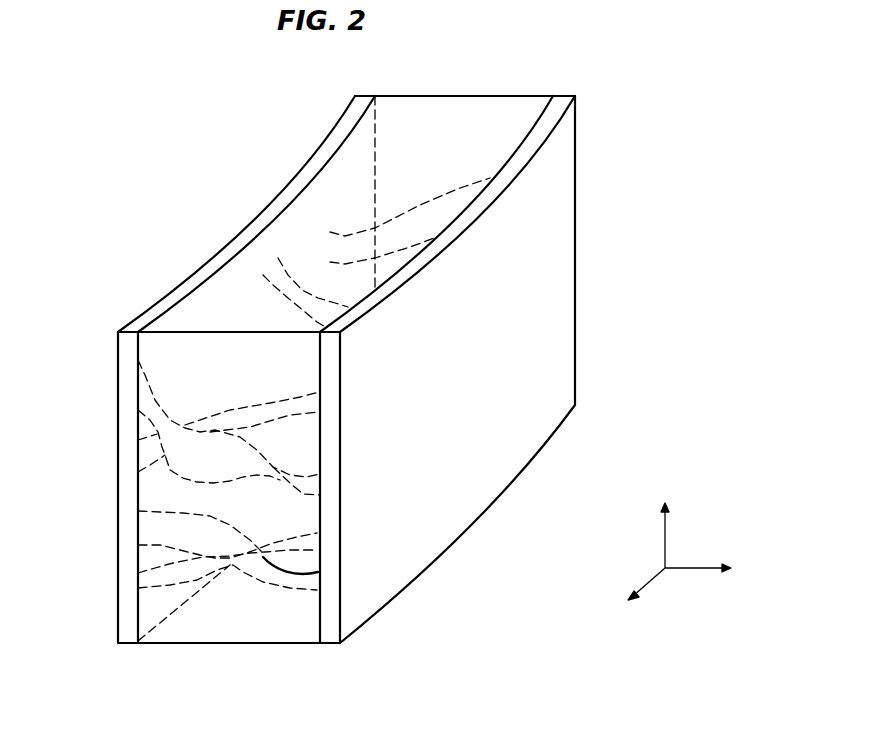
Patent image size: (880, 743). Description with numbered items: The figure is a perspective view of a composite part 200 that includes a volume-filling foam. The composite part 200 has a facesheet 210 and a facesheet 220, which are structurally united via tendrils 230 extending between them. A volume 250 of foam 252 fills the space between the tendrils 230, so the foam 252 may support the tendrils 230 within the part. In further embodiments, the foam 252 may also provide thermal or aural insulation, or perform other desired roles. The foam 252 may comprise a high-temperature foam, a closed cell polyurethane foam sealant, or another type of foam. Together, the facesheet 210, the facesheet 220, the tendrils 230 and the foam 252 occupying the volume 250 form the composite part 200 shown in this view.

The composite part 200 is at (503, 560).
The facesheet 210 is at (118, 462).
The facesheet 220 is at (576, 308).
The tendrils 230 is at (258, 544).
The volume 250 is at (523, 95).
The foam 252 is at (420, 116).